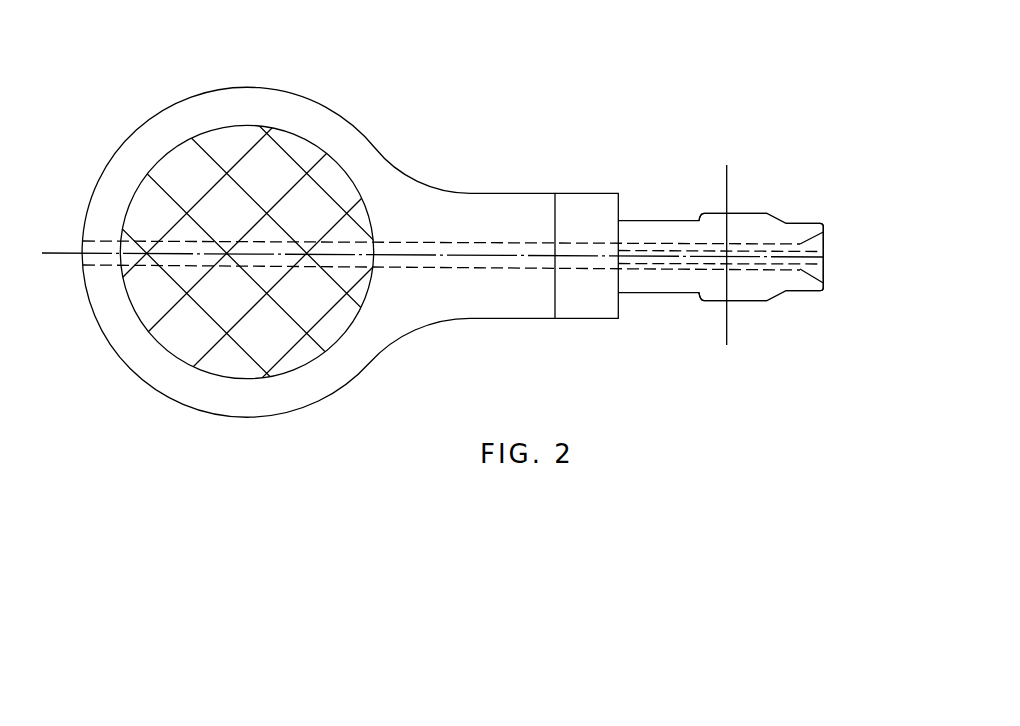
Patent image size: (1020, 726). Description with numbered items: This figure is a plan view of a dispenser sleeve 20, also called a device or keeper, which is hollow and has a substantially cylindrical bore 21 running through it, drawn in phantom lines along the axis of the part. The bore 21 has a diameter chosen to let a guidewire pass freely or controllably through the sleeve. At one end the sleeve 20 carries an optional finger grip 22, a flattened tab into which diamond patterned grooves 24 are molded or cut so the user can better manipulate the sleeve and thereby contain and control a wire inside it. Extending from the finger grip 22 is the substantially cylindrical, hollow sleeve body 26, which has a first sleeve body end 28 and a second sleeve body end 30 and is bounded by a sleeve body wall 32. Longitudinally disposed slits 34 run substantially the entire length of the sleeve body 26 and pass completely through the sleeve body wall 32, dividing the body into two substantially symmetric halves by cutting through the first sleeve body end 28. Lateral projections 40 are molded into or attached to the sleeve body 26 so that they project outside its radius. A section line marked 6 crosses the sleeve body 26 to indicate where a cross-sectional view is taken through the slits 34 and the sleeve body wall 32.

The dispenser sleeve 20 is at (620, 135).
The bore 21 is at (92, 272).
The finger grip 22 is at (290, 85).
The diamond patterned grooves 24 is at (270, 348).
The sleeve body 26 is at (662, 284).
The first sleeve body end 28 is at (803, 220).
The second sleeve body end 30 is at (590, 320).
The sleeve body wall 32 is at (792, 270).
The slits 34 is at (677, 253).
The lateral projections 40 is at (708, 210).
The section line 6- 6 is at (760, 343).